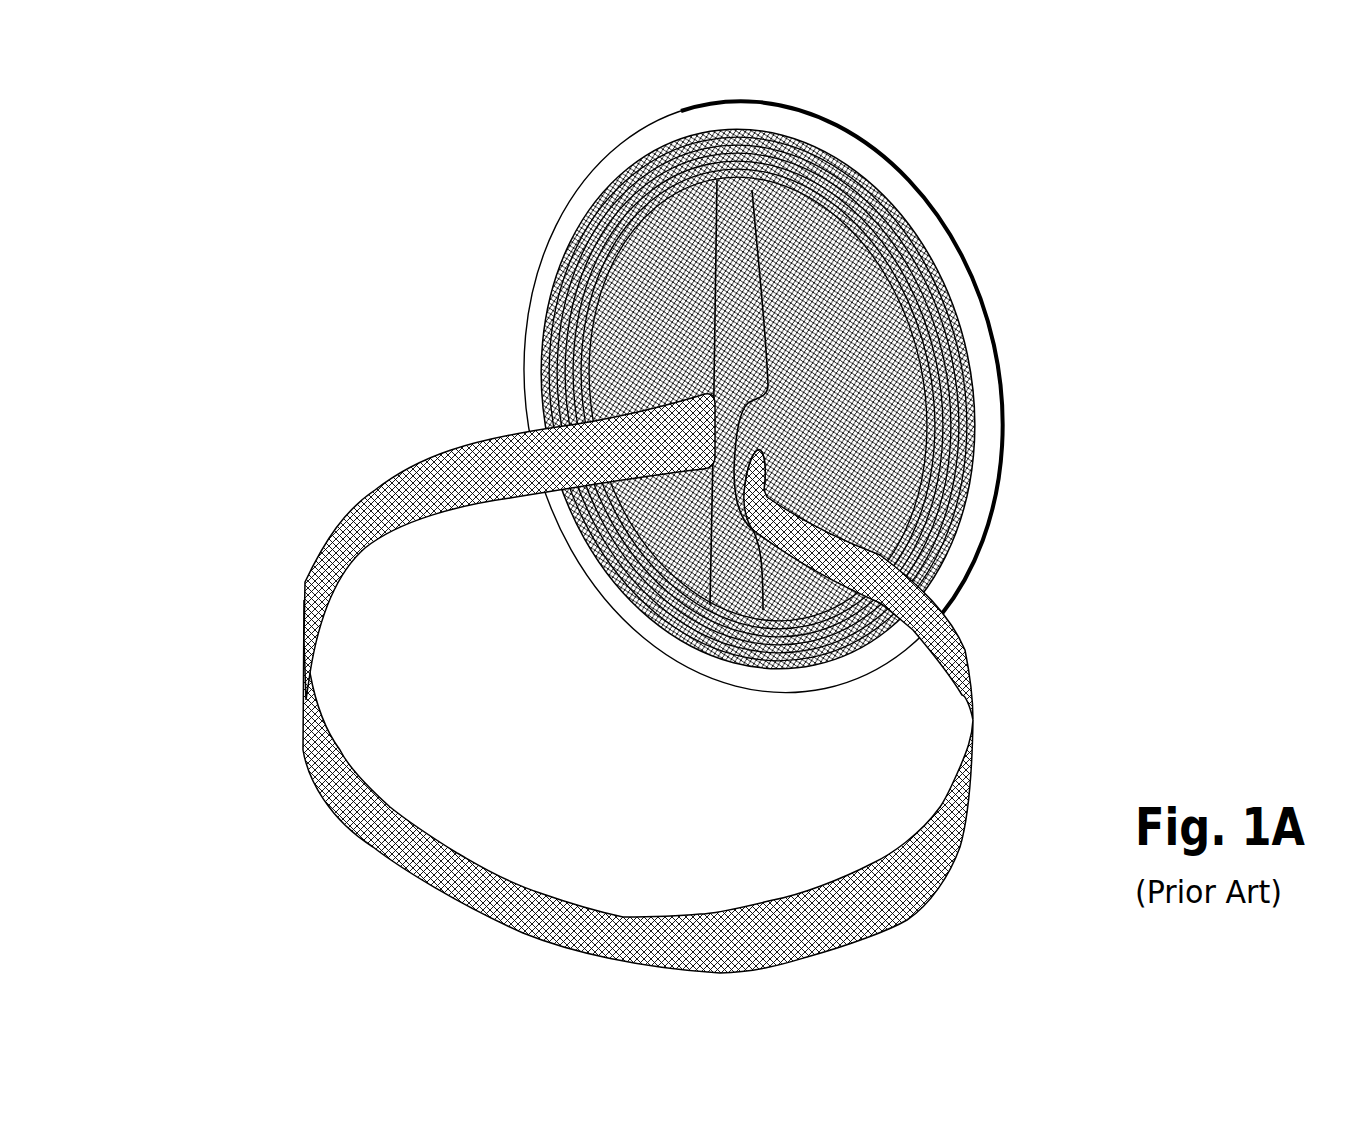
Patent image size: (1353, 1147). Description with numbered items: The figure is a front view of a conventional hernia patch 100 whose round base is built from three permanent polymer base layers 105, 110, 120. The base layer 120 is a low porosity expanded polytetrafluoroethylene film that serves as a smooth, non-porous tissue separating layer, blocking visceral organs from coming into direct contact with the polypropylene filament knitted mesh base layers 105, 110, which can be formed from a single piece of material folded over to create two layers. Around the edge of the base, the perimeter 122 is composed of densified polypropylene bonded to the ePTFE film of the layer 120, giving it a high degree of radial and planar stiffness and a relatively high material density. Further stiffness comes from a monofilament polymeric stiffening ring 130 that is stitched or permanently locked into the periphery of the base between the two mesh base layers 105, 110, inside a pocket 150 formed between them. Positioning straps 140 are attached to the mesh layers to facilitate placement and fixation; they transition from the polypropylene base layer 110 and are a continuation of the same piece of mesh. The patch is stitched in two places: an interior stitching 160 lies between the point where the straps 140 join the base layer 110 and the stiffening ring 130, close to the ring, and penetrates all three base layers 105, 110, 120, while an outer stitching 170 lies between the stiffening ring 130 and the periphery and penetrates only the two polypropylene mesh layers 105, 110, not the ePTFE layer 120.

The conventional hernia patch 100 is at (693, 514).
The base layer 105 is at (734, 297).
The polypropylene base layer 110 is at (878, 372).
The ePTFE polymer film layer 120 is at (885, 223).
The perimeter 122 is at (858, 162).
The stiffening ring 130 is at (965, 466).
The positioning straps 140 is at (305, 575).
The pocket 150 is at (732, 233).
The interior stitching 160 is at (570, 332).
The outer stitching 170 is at (542, 387).